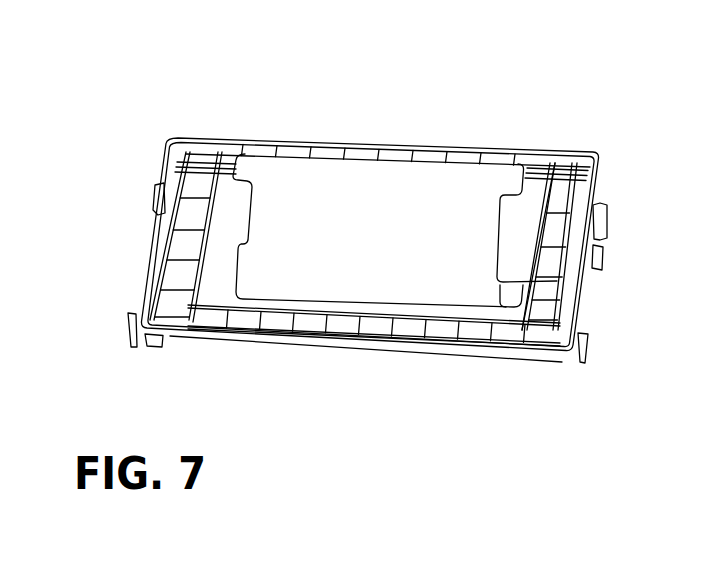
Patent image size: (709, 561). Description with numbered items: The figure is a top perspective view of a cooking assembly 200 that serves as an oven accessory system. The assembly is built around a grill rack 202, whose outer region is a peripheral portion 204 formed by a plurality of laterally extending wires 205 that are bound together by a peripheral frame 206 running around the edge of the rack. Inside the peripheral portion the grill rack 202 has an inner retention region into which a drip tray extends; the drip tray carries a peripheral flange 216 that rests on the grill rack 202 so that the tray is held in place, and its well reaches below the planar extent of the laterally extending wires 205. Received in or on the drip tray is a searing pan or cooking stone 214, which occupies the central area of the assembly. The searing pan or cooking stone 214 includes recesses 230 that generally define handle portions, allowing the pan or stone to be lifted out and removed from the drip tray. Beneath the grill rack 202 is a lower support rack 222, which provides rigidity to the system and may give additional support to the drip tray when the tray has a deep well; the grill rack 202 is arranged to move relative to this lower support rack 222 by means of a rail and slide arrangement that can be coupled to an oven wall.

The cooking assembly 200 is at (452, 112).
The grill rack 202 is at (560, 150).
The peripheral portion 204 is at (226, 154).
The laterally extending wires 205 is at (545, 215).
The peripheral frame 206 is at (362, 141).
The searing pan or cooking stone 214 is at (418, 273).
The peripheral flange 216 is at (243, 221).
The lower support rack 222 is at (228, 347).
The recesses 230 is at (243, 244).